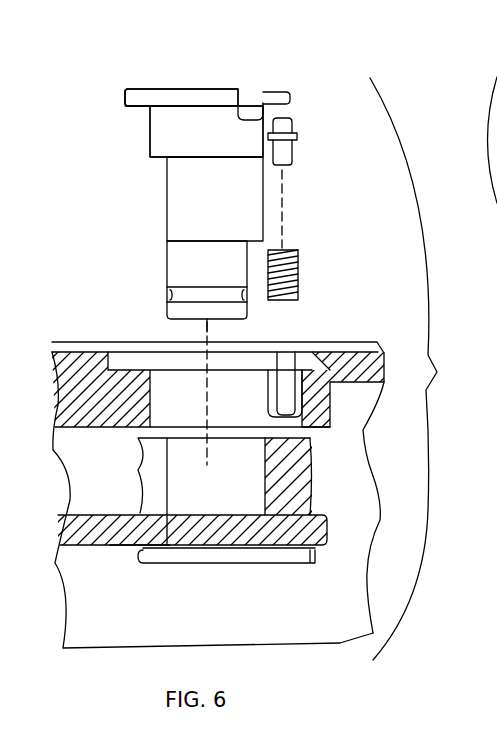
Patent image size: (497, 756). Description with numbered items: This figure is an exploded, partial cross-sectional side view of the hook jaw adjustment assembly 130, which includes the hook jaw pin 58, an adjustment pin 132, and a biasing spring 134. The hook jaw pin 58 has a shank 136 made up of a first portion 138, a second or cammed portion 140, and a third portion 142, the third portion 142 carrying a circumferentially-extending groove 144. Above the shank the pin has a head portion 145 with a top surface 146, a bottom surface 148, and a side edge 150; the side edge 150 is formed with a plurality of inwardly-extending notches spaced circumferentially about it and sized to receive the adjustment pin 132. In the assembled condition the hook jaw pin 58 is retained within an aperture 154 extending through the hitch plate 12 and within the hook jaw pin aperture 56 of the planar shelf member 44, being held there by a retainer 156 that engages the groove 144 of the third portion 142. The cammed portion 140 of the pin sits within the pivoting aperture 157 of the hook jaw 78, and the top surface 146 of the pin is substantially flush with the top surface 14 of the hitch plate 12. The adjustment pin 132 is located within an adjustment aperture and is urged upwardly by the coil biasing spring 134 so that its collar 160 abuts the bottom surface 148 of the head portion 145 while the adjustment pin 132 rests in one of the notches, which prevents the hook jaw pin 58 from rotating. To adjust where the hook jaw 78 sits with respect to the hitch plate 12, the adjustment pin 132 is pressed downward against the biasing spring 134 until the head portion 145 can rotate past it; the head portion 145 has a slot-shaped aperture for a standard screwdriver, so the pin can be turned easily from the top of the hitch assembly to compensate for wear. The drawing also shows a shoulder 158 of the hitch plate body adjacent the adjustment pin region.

The hitch plate 12 is at (67, 382).
The top surface 14 is at (85, 342).
The shelf member 44 is at (68, 527).
The hook jaw pin aperture 56 is at (123, 543).
The hook jaw pin 58 is at (99, 199).
The hook jaw 78 is at (313, 462).
The hook jaw adjustment assembly 130 is at (426, 369).
The adjustment pin 132 is at (293, 157).
The biasing spring 134 is at (298, 283).
The shank 136 is at (157, 208).
The first portion 138 is at (148, 137).
The cammed portion 140 is at (263, 202).
The third portion 142 is at (165, 253).
The groove 144 is at (247, 297).
The head portion 145 is at (153, 79).
The top surface 146 is at (205, 88).
The bottom surface 148 is at (137, 108).
The side edge 150 is at (125, 97).
The aperture 154 is at (150, 388).
The retainer 156 is at (173, 564).
The pivoting aperture 157 is at (270, 481).
The shoulder 158 is at (331, 384).
The collar 160 is at (302, 133).